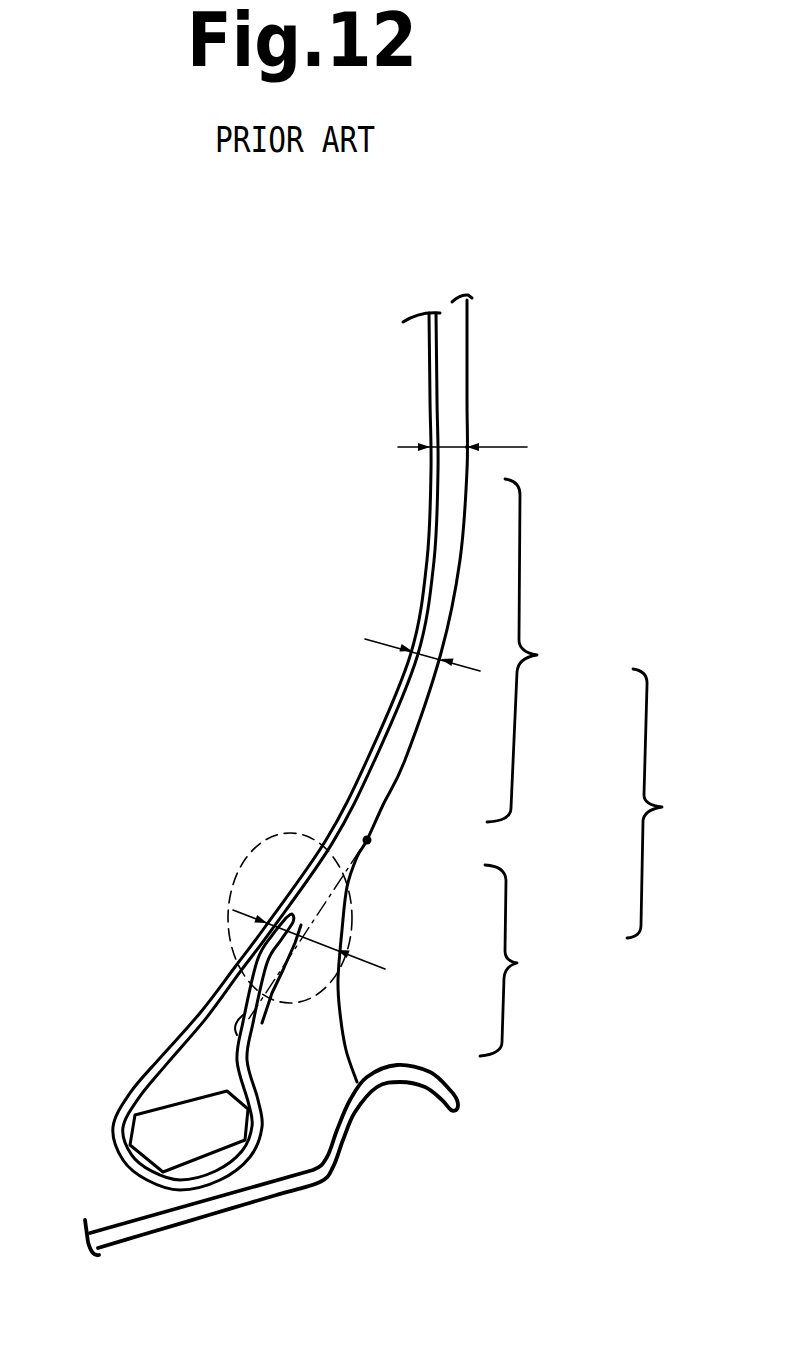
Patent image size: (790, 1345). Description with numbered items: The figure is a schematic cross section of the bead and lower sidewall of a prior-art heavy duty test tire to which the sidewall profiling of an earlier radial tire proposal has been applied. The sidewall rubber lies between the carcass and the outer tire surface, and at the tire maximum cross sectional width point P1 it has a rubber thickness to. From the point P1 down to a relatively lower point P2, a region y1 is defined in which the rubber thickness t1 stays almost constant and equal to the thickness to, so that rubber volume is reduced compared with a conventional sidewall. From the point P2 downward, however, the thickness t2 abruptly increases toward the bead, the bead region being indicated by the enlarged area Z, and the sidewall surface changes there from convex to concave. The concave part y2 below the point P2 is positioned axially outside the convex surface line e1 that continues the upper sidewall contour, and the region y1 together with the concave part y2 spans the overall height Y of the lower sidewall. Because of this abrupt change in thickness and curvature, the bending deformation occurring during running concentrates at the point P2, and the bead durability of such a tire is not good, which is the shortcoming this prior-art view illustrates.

The rubber thickness to is at (453, 447).
The rubber thickness t1 is at (435, 657).
The rubber thickness t2 is at (300, 912).
The tire maximum cross sectional width point P1 is at (470, 444).
The relatively lower point P2 is at (367, 840).
The bead region (enlarged area) Z is at (247, 880).
The total height range Y is at (658, 803).
The region y1 is at (538, 650).
The concave part y2 is at (524, 960).
The convex surface line e1 is at (262, 995).